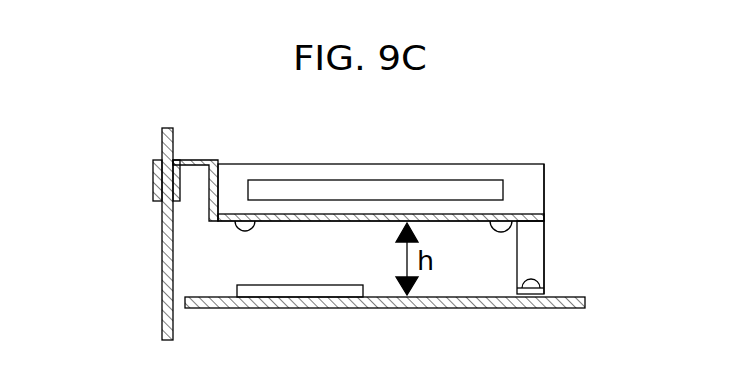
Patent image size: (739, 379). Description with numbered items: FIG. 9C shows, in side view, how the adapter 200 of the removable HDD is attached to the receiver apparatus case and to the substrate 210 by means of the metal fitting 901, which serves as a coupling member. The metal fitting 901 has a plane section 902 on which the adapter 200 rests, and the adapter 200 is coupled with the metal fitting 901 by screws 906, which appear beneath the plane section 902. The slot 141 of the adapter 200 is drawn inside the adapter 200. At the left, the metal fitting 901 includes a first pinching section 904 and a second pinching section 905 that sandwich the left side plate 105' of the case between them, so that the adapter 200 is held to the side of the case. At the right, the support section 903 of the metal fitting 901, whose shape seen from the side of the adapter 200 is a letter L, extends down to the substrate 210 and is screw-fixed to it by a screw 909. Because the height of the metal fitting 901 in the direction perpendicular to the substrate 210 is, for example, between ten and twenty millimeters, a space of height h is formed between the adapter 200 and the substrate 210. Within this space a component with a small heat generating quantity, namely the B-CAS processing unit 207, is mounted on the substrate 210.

The left side plate 105' is at (127, 244).
The first pinching section 904 is at (153, 187).
The second pinching section 905 is at (190, 182).
The adapter of the removable HDD 200 is at (318, 163).
The plane section 902 is at (335, 223).
The slot 141 is at (432, 188).
The screws 906 is at (242, 233).
The metal fitting 901 is at (545, 218).
The support section 903 is at (537, 253).
The screw 909 is at (533, 284).
The B-CAS processing unit 207 is at (303, 288).
The substrate 210 is at (475, 310).